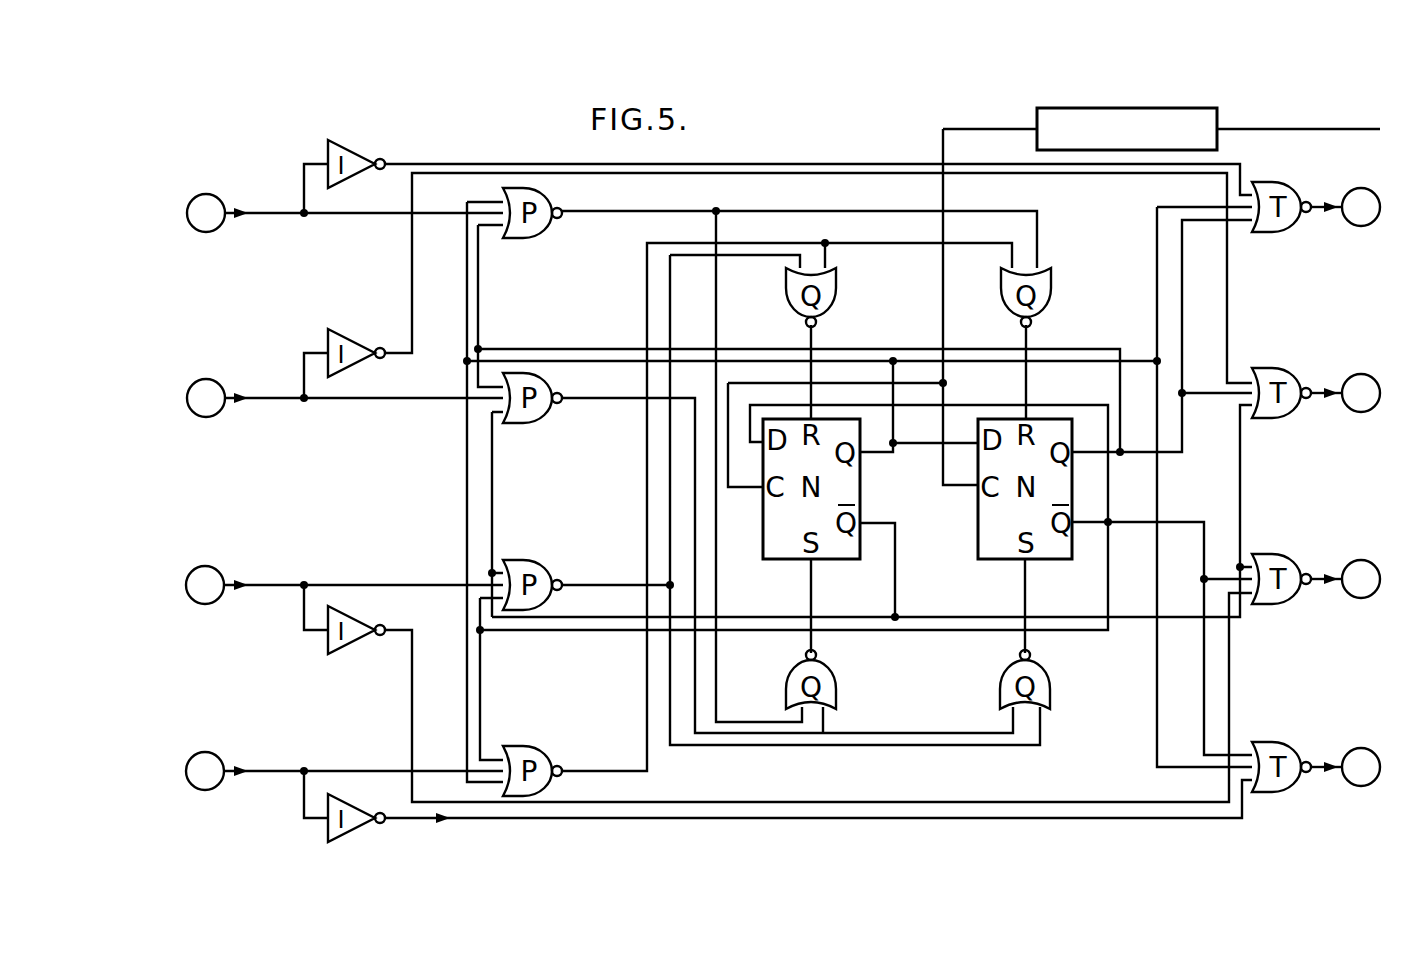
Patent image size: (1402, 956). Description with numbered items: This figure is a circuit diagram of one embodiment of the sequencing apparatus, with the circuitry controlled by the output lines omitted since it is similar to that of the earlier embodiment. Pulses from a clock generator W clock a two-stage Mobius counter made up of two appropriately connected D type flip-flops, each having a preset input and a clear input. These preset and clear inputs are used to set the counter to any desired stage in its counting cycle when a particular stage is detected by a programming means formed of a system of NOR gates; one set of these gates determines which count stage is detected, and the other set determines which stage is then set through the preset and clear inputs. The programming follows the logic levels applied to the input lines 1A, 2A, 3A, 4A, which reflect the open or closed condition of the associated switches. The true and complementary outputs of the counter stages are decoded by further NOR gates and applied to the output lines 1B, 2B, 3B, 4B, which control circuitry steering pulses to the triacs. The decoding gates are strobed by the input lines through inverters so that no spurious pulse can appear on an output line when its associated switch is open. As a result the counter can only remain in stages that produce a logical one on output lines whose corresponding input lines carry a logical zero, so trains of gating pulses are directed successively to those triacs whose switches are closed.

The input line 1A is at (245, 213).
The input line 2A is at (245, 398).
The input line 3A is at (245, 585).
The input line 4A is at (245, 771).
The output line 1B is at (1345, 207).
The output line 2B is at (1345, 393).
The output line 3B is at (1345, 579).
The output line 4B is at (1345, 767).
The clock generator W is at (1127, 129).